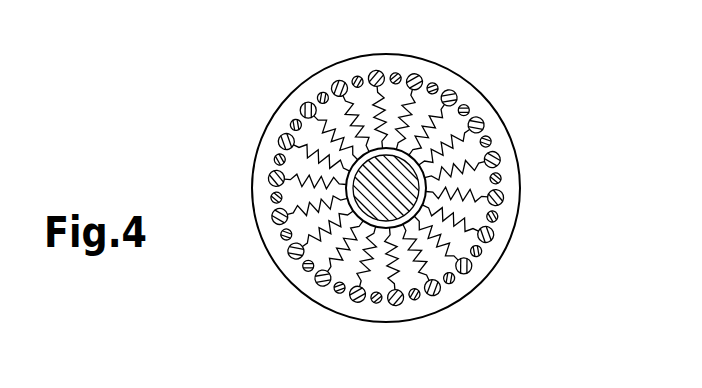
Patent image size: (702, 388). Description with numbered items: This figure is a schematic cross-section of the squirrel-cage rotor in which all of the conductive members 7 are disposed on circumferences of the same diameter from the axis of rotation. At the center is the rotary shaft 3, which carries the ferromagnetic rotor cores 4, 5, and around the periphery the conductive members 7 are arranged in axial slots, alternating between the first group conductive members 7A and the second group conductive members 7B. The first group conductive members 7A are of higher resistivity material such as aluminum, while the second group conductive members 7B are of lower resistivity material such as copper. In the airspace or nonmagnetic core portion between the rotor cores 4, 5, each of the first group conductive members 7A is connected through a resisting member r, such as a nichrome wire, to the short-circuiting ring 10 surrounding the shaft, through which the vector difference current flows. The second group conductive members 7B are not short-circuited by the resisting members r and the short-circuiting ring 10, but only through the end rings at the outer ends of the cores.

The rotary shaft 3 is at (364, 208).
The rotor core 4 is at (336, 187).
The rotor core 5 is at (298, 163).
The conductive members 7 is at (428, 179).
The first group conductive members 7A is at (456, 92).
The second group conductive members 7B is at (469, 110).
The short-circuiting ring 10 is at (372, 200).
The resisting members r is at (426, 263).